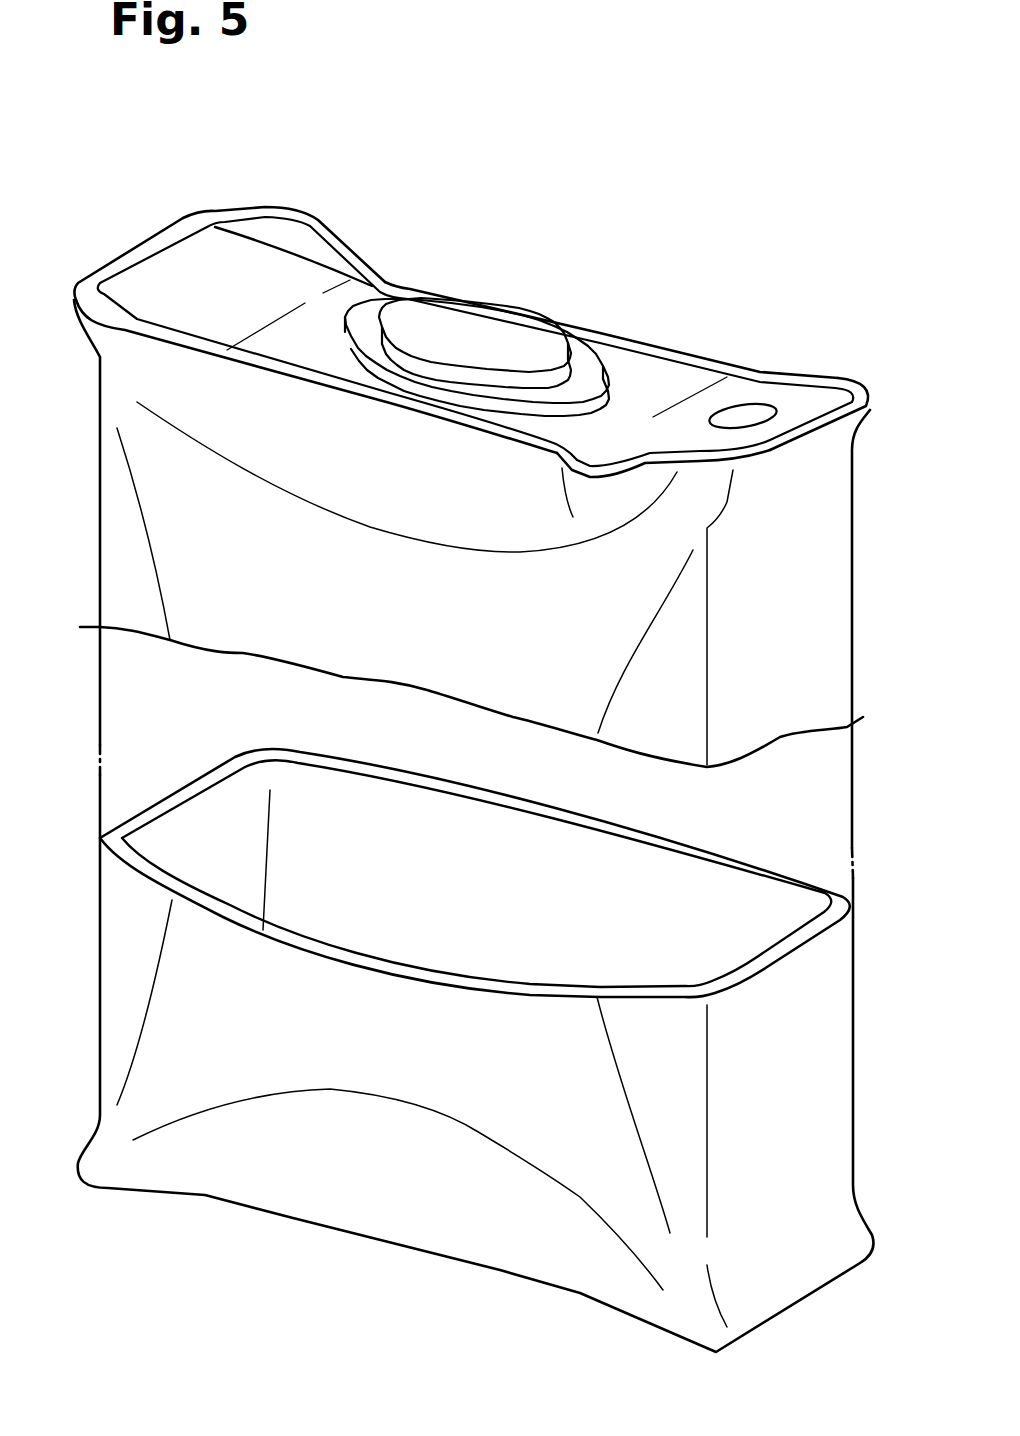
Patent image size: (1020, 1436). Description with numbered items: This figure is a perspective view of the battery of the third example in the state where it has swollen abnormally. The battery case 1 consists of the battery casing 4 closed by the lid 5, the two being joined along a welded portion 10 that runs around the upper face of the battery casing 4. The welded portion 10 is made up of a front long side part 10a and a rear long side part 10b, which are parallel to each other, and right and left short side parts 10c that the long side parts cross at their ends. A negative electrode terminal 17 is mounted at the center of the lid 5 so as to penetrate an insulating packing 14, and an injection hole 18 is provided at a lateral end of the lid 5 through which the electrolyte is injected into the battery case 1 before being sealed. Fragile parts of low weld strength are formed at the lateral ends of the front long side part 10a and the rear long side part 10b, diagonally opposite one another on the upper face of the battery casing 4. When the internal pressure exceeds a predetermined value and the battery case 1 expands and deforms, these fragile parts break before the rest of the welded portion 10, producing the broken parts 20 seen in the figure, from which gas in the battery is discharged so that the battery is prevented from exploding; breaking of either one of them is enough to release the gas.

The battery case 1 is at (70, 238).
The battery casing 4 is at (823, 555).
The lid 5 is at (210, 250).
The welded portion 10 is at (400, 287).
The front long side part 10a is at (417, 401).
The rear long side part 10b is at (650, 353).
The short side part 10c is at (140, 257).
The insulating packing 14 is at (583, 357).
The negative electrode terminal 17 is at (483, 323).
The injection hole 18 is at (750, 413).
The broken part 20 is at (293, 240).